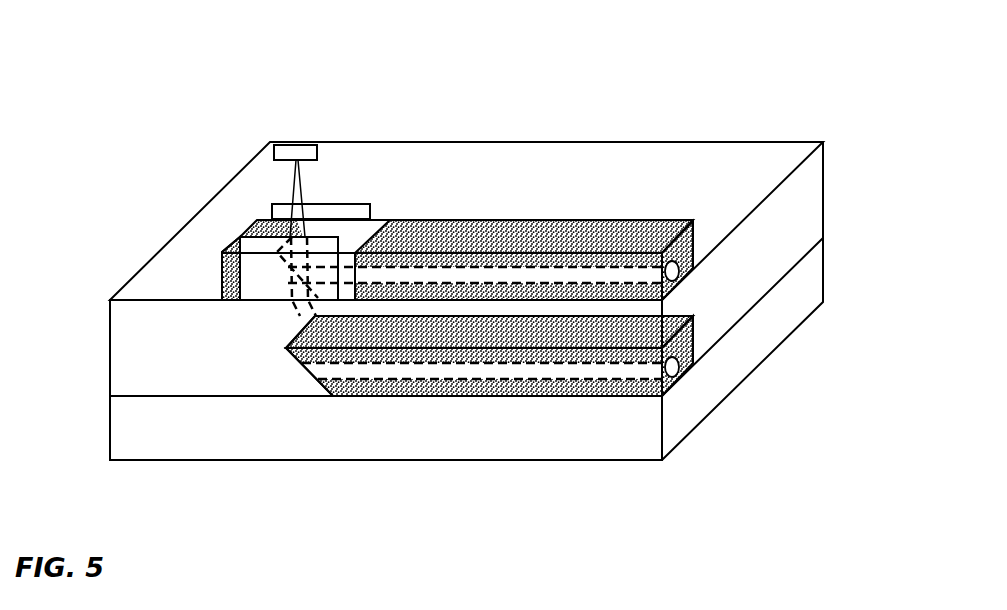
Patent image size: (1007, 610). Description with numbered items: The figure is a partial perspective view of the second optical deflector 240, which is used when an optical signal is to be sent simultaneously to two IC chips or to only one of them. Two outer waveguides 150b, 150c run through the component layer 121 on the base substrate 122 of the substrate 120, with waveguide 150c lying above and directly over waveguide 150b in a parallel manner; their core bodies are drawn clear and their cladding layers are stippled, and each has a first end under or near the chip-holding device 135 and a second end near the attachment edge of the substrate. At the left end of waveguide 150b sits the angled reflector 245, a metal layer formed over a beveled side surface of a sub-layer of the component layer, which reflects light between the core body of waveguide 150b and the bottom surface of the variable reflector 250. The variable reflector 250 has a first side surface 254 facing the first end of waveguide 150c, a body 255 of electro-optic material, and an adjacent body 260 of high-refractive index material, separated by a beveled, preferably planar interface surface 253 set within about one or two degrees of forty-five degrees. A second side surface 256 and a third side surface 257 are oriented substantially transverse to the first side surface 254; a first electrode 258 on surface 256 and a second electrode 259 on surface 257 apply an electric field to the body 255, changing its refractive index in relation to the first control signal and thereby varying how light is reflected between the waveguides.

The optical deflector 240 is at (173, 80).
The substrate 120 is at (398, 462).
The component layer 121 is at (118, 348).
The base substrate 122 is at (125, 427).
The outer waveguide 150c is at (697, 267).
The outer waveguide 150b is at (693, 363).
The angled reflector 245 is at (310, 375).
The variable reflector 250 is at (258, 220).
The body of electro-optic material 255 is at (253, 222).
The second side surface 256 is at (260, 220).
The third side surface 257 is at (222, 260).
The second electrode 259 is at (270, 283).
The body of high-refractive index material 260 is at (353, 235).
The first side surface 254 is at (400, 218).
The chip-holding device 135 is at (288, 153).
The first electrode 258 is at (332, 207).
The interface surface 253 is at (290, 263).